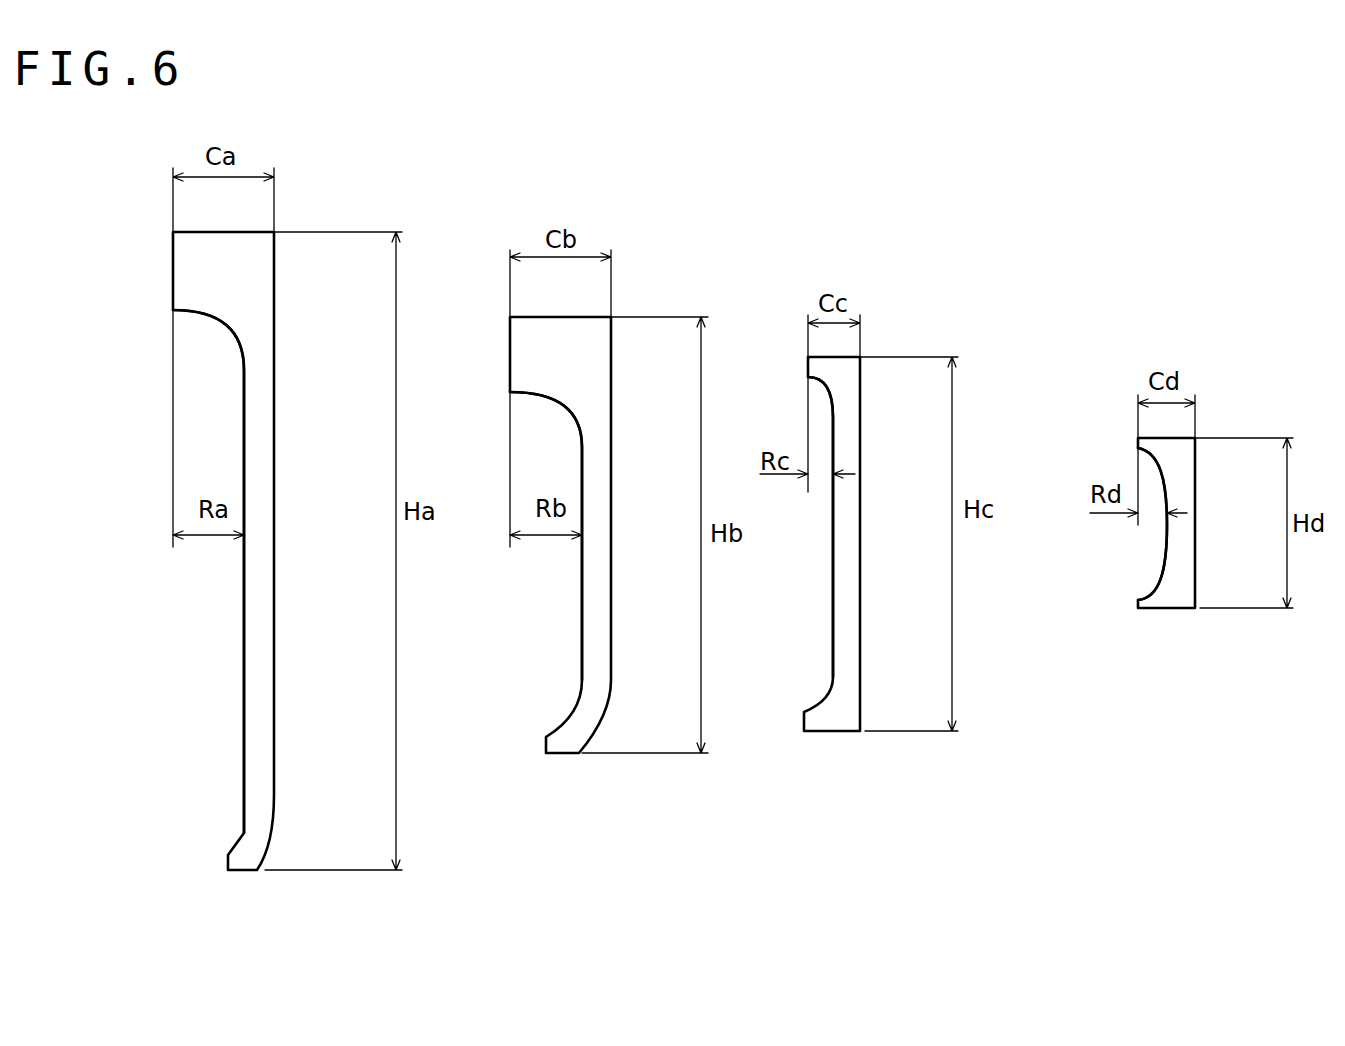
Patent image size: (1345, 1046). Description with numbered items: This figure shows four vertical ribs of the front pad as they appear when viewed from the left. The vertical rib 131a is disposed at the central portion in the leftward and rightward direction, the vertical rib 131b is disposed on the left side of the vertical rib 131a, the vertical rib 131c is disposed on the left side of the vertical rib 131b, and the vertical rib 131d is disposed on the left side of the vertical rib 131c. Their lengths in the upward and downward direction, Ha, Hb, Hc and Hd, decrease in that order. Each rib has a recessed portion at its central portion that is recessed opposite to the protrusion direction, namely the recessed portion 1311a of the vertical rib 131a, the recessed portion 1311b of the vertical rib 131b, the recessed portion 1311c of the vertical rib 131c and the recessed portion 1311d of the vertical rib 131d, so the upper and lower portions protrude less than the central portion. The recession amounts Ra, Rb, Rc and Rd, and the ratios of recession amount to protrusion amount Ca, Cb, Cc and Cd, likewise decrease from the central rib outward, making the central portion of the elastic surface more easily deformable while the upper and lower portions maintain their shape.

The vertical rib 131a is at (258, 459).
The recessed portion 1311a is at (244, 408).
The vertical rib 131b is at (598, 508).
The recessed portion 1311b is at (580, 482).
The vertical rib 131c is at (847, 552).
The recessed portion 1311c is at (832, 592).
The vertical rib 131d is at (1190, 490).
The recessed portion 1311d is at (1165, 552).